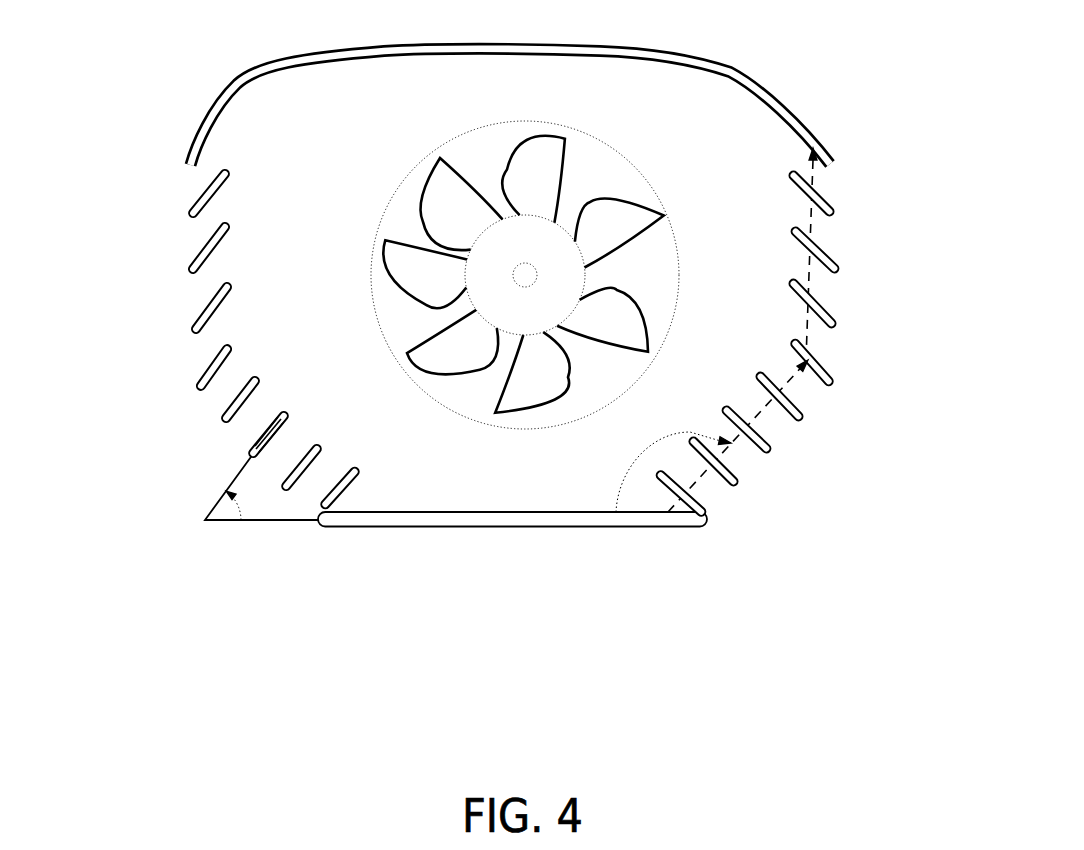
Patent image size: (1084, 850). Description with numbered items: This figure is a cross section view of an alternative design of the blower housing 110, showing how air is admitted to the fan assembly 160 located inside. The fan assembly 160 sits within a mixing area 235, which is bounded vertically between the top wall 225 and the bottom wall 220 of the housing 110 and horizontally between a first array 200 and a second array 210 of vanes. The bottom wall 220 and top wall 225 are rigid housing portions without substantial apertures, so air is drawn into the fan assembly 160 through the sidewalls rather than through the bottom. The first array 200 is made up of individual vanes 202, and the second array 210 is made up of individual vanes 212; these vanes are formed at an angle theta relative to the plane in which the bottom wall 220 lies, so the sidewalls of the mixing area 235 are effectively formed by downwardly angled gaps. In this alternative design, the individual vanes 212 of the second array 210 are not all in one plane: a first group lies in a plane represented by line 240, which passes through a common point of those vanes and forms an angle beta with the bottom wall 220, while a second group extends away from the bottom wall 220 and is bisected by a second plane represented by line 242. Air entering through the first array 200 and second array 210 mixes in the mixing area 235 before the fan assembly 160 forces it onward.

The housing 110 is at (813, 69).
The fan assembly 160 is at (445, 238).
The first array 200 is at (176, 433).
The individual vanes 202 is at (226, 233).
The second array 210 is at (833, 458).
The individual vanes 212 is at (795, 175).
The bottom wall 220 is at (483, 521).
The top wall 225 is at (458, 53).
The mixing area 235 is at (285, 121).
The line 240 is at (765, 409).
The line 242 is at (808, 275).